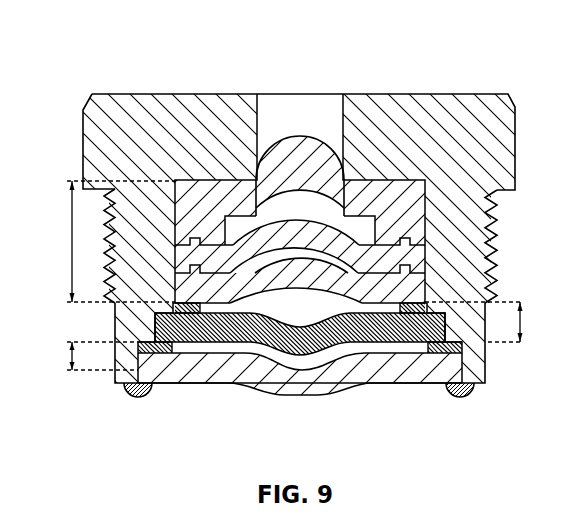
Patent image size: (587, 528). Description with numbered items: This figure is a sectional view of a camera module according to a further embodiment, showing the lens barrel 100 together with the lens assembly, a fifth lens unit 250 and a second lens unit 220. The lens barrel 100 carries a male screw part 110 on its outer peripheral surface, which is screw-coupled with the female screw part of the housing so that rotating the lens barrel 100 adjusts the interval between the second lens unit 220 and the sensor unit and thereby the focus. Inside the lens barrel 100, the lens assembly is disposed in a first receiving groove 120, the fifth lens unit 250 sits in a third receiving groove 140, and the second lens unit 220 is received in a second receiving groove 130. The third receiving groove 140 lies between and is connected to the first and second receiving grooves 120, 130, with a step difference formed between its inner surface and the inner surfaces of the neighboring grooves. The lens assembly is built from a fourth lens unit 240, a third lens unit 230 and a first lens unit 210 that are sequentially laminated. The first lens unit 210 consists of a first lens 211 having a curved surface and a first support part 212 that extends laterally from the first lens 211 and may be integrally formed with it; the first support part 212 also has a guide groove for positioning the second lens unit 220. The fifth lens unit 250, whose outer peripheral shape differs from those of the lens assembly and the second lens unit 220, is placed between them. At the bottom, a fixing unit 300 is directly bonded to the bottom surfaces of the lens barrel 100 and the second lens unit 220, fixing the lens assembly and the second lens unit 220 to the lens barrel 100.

The lens barrel 100 is at (97, 142).
The male screw part 110 is at (492, 203).
The first receiving groove 120 is at (110, 241).
The second receiving groove 130 is at (90, 356).
The third receiving groove 140 is at (486, 322).
The first lens unit 210 is at (317, 168).
The first lens 211 is at (302, 152).
The first support part 212 is at (381, 188).
The second lens unit 220 is at (319, 388).
The third lens unit 230 is at (418, 261).
The fourth lens unit 240 is at (418, 291).
The fifth lens unit 250 is at (207, 330).
The fixing unit 300 is at (460, 399).